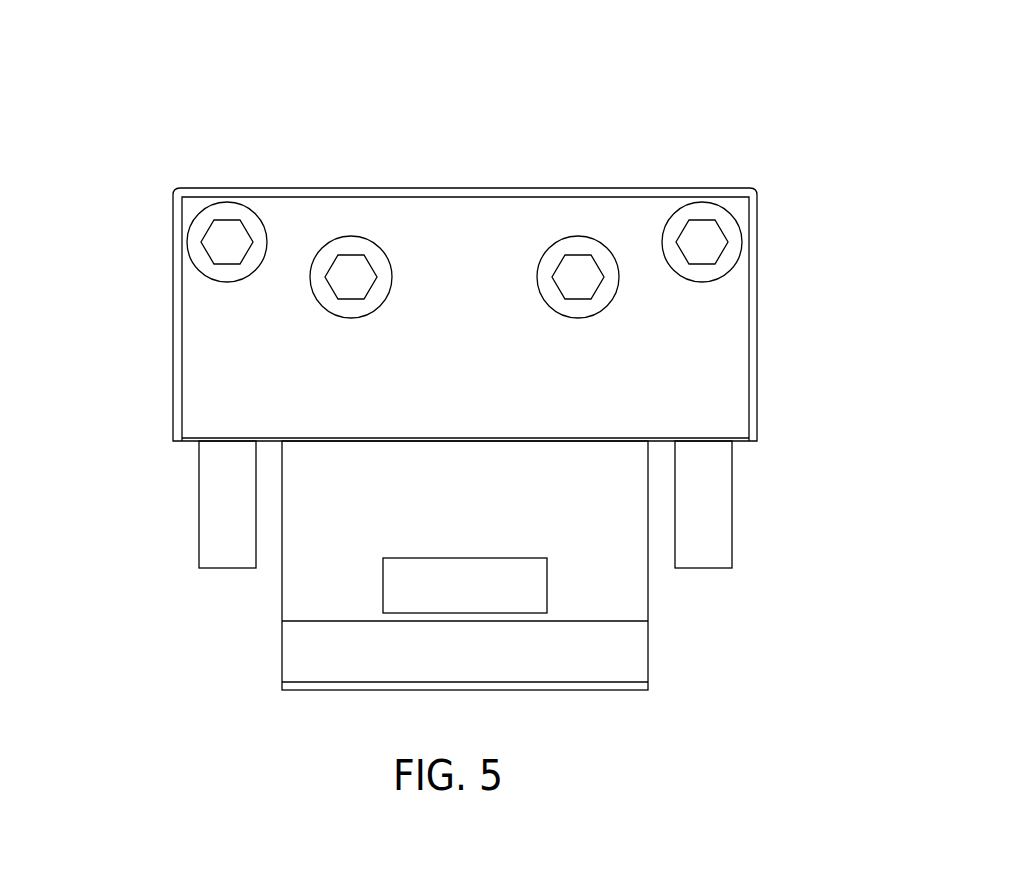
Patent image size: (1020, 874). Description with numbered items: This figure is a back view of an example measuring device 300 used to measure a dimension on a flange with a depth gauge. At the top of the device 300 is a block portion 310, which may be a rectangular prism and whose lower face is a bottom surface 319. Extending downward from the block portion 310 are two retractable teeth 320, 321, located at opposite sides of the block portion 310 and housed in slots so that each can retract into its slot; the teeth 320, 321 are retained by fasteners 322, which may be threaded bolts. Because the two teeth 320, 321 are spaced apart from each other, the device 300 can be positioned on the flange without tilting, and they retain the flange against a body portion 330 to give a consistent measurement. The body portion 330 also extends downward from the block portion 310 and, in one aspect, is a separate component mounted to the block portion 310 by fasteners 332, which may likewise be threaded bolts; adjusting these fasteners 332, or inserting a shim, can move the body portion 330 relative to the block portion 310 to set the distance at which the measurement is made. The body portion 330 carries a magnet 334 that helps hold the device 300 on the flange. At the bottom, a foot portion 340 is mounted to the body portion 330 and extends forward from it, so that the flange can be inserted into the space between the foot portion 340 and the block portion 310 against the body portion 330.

The measuring device 300 is at (471, 153).
The block portion 310 is at (448, 185).
The bottom surface 319 is at (193, 440).
The retractable tooth 320 is at (198, 517).
The retractable tooth 321 is at (732, 500).
The fastener 322 is at (207, 217).
The body portion 330 is at (293, 555).
The fastener 332 is at (345, 245).
The magnet 334 is at (465, 607).
The foot portion 340 is at (288, 645).